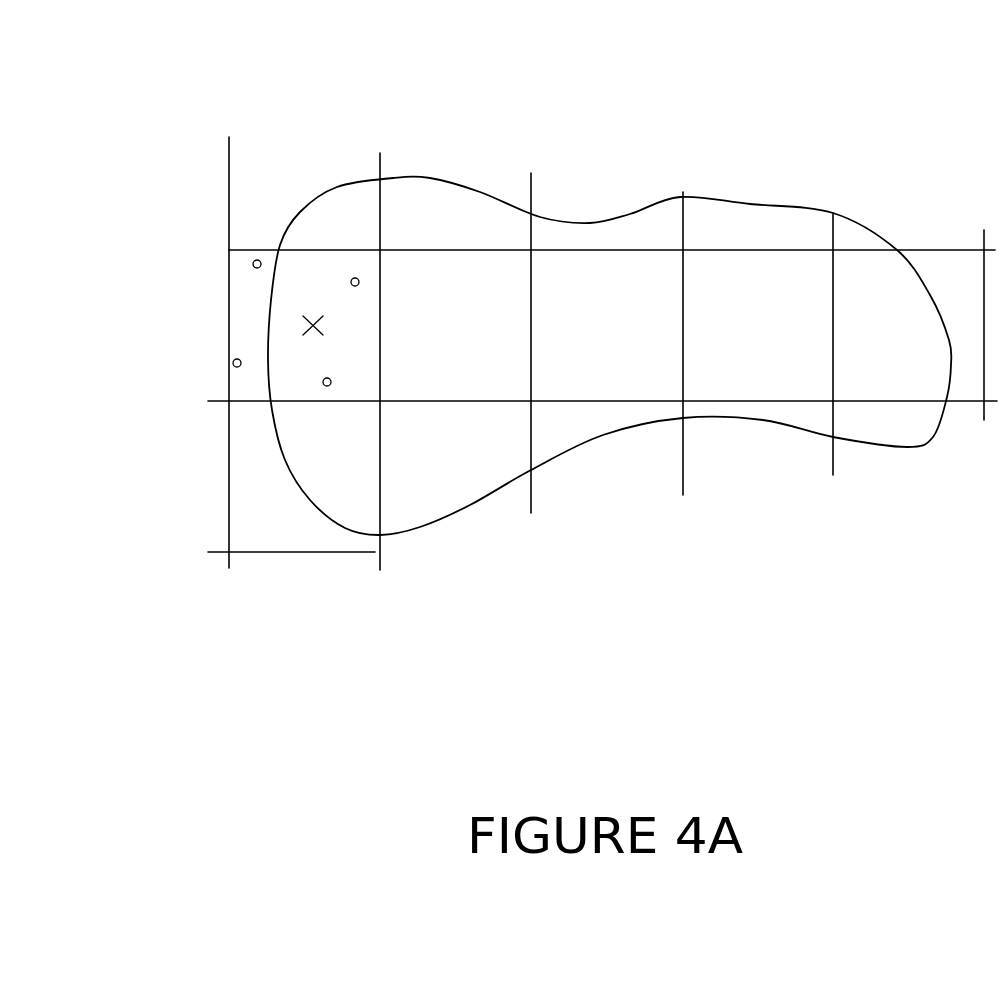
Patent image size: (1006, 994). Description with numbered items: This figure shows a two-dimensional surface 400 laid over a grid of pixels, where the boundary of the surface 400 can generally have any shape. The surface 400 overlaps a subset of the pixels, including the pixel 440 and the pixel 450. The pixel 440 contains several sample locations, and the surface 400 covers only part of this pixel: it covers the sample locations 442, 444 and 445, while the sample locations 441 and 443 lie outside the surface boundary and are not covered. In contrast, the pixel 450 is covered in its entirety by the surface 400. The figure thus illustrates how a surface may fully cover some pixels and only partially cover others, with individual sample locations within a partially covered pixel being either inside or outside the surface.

The surface 400 is at (790, 200).
The pixel 440 is at (248, 287).
The sample location 441 is at (226, 358).
The sample location 442 is at (317, 385).
The sample location 443 is at (254, 256).
The sample location 444 is at (305, 304).
The sample location 445 is at (350, 270).
The pixel 450 is at (645, 288).